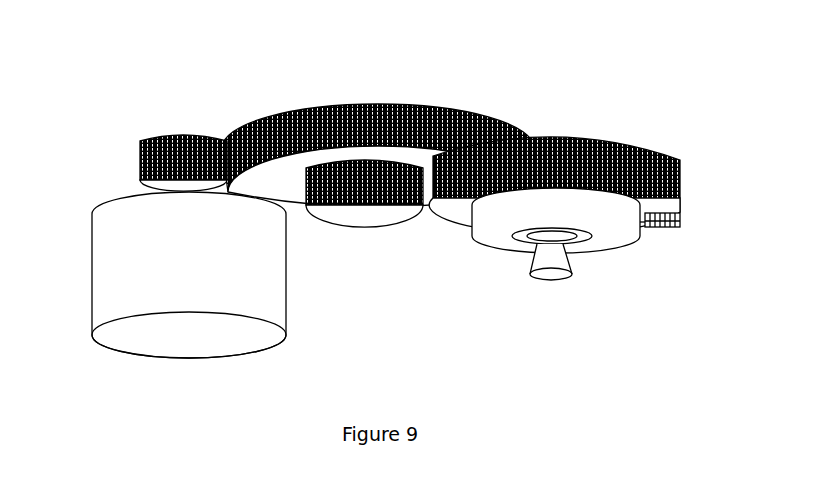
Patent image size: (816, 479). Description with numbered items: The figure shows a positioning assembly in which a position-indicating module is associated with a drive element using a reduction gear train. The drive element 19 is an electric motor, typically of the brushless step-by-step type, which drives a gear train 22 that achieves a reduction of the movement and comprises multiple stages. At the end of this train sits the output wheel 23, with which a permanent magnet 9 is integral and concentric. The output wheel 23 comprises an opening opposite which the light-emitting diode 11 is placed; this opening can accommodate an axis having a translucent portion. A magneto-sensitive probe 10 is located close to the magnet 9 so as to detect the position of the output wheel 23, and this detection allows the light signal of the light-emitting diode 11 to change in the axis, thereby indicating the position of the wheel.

The permanent magnet 9 is at (581, 204).
The magneto-sensitive probe 10 is at (666, 258).
The light-emitting diode 11 is at (548, 263).
The drive element 19 is at (268, 303).
The gear train 22 is at (333, 77).
The output wheel 23 is at (576, 130).